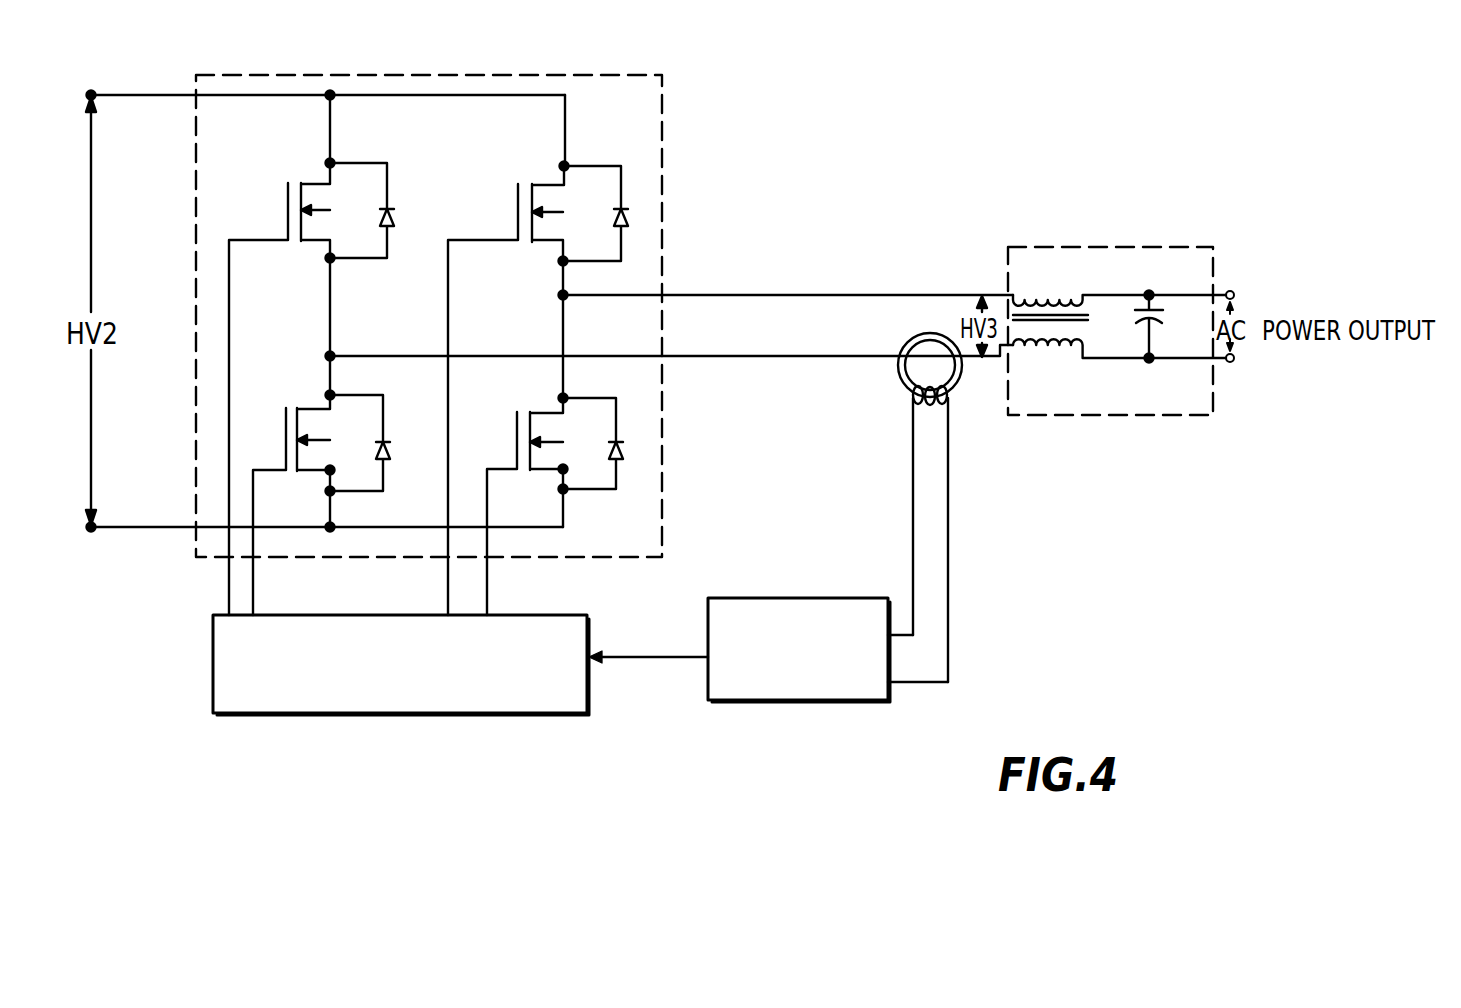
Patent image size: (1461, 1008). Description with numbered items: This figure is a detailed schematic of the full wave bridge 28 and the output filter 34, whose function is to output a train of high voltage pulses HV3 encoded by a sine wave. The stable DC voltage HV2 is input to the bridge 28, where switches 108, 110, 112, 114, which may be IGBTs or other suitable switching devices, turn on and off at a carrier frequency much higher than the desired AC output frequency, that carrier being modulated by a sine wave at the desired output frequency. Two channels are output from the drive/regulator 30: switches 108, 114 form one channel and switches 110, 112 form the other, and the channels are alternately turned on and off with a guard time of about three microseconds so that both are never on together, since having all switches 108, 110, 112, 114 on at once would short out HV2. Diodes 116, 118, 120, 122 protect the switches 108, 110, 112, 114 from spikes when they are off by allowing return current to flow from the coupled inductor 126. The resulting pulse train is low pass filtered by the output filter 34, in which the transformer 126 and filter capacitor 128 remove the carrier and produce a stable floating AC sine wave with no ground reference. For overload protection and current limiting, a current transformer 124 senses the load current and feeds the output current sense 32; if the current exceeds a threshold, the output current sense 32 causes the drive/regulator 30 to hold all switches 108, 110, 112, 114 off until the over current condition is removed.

The full wave bridge 28 is at (634, 86).
The drive/regulator 30 is at (483, 713).
The output current sense 32 is at (793, 700).
The output filter 34 is at (1123, 258).
The switch 108 is at (310, 230).
The switch 110 is at (310, 460).
The switch 112 is at (545, 230).
The switch 114 is at (545, 455).
The diode 116 is at (393, 217).
The diode 118 is at (388, 453).
The diode 120 is at (628, 221).
The diode 122 is at (624, 452).
The current transformer 124 is at (915, 394).
The transformer 126 is at (1072, 345).
The filter capacitor 128 is at (1169, 327).